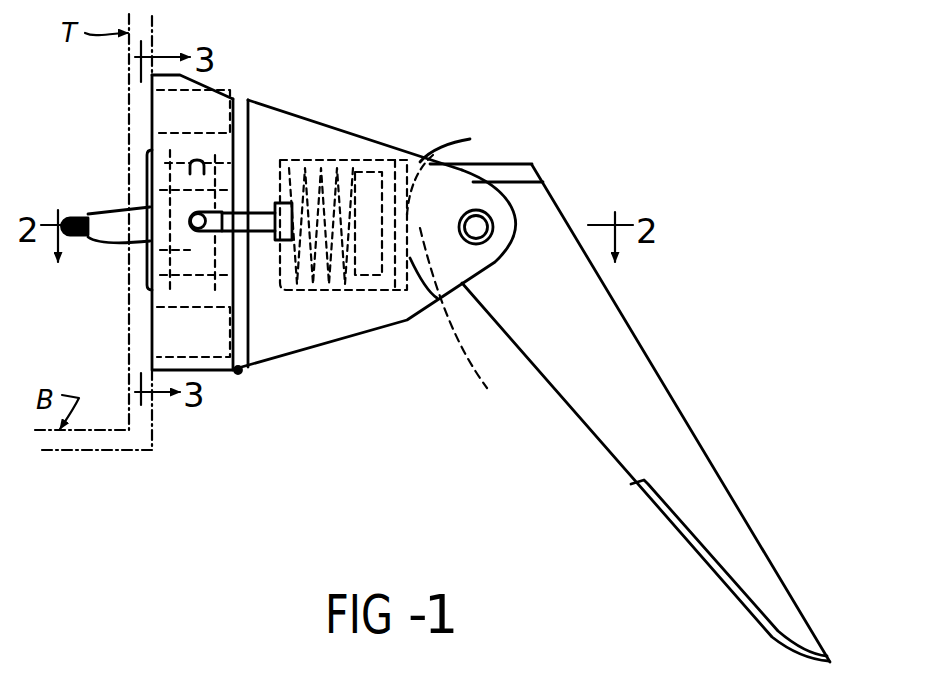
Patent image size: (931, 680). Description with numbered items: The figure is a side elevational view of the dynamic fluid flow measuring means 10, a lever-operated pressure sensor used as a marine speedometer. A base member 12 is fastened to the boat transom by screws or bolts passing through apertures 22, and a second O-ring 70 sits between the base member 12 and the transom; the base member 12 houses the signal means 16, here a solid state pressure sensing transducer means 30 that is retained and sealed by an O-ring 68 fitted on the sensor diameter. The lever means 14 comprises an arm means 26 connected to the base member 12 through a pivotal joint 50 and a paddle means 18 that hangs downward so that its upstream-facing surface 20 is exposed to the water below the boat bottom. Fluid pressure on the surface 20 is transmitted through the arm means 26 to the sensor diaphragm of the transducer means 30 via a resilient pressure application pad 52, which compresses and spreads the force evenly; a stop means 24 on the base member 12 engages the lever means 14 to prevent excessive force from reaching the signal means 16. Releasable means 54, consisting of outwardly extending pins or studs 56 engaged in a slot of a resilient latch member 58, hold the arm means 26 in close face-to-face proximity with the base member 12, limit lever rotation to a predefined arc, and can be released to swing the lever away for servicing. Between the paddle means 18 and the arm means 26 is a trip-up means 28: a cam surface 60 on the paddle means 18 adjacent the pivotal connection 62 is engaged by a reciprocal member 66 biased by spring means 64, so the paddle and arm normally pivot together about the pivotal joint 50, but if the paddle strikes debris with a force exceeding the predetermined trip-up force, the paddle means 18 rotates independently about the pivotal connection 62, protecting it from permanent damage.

The dynamic fluid flow measuring means 10 is at (570, 112).
The base member 12 is at (200, 84).
The lever means 14 is at (416, 353).
The signal means 16 is at (250, 98).
The paddle means 18 is at (682, 414).
The surface 20 is at (690, 548).
The apertures 22 is at (158, 92).
The stop means 24 is at (254, 101).
The arm means 26 is at (330, 123).
The trip-up means 28 is at (338, 296).
The solid state pressure sensing transducer means 30 is at (128, 312).
The pivotal joint 50 is at (237, 375).
The resilient pressure application pad 52 is at (243, 208).
The releasable means 54 is at (258, 236).
The pins or studs 56 is at (193, 215).
The latch member 58 is at (192, 233).
The cam surface 60 is at (470, 139).
The pivotal connection 62 is at (490, 218).
The spring means 64 is at (405, 160).
The reciprocal member 66 is at (474, 323).
The O-ring 68 is at (220, 168).
The second O-ring 70 is at (217, 270).